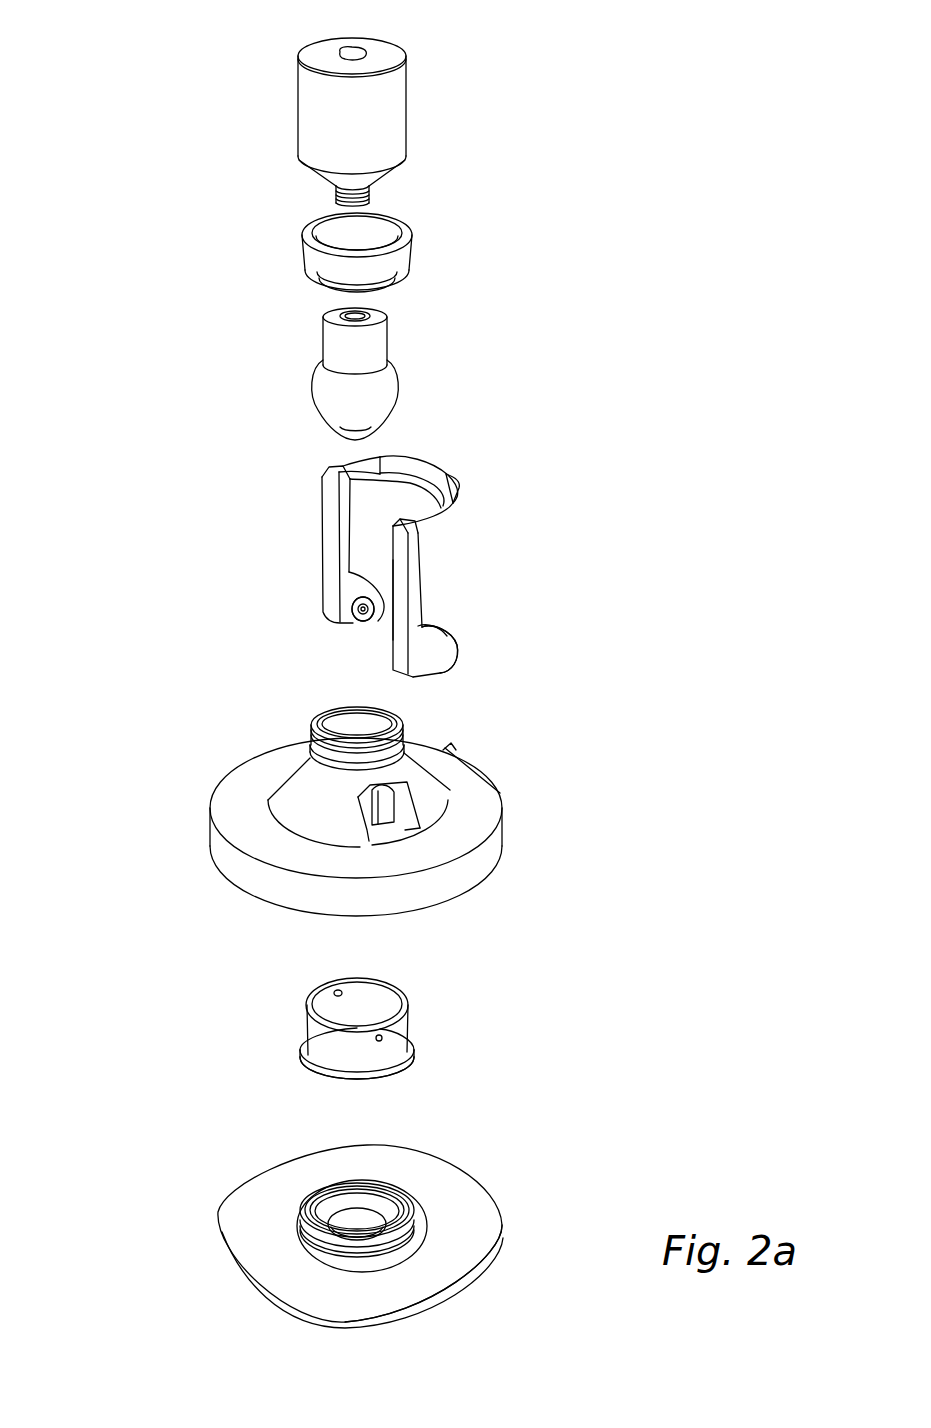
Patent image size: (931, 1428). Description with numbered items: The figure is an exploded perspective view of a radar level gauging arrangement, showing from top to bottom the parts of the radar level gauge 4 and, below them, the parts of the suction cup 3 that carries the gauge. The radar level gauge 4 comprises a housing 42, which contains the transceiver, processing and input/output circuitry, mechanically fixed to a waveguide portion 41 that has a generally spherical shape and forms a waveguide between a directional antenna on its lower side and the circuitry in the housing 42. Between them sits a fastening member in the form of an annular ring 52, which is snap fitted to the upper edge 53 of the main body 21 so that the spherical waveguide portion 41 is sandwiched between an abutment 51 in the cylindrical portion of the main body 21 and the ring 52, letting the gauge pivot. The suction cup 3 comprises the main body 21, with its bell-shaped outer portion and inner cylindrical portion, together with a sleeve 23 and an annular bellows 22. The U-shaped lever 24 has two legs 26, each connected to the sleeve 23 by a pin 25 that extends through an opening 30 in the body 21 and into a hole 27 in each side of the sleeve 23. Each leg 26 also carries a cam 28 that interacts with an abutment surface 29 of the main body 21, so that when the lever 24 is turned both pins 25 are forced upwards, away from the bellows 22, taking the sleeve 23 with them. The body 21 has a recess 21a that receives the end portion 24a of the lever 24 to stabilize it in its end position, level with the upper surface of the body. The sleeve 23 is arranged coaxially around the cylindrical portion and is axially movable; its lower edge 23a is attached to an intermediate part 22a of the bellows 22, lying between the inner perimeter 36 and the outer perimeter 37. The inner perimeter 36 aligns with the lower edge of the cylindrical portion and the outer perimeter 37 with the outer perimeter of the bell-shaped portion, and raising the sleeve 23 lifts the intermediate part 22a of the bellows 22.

The suction cup 3 is at (155, 1281).
The radar level gauge 4 is at (257, 349).
The housing 42 is at (395, 128).
The annular ring 52 is at (398, 262).
The waveguide portion 41 is at (385, 393).
The lever 24 is at (432, 470).
The end portion 24a is at (458, 485).
The leg 26 is at (417, 587).
The cam 28 is at (458, 647).
The pin 25 is at (365, 622).
The main body 21 is at (393, 802).
The recess 21a is at (485, 780).
The abutment 51 is at (375, 722).
The upper edge 53 is at (315, 722).
The abutment surface 29 is at (397, 833).
The opening 30 is at (378, 802).
The sleeve 23 is at (381, 1021).
The hole 27 is at (343, 995).
The lower edge 23a is at (310, 1060).
The annular bellows 22 is at (401, 1220).
The intermediate part 22a is at (322, 1193).
The inner perimeter 36 is at (360, 1217).
The outer perimeter 37 is at (502, 1228).